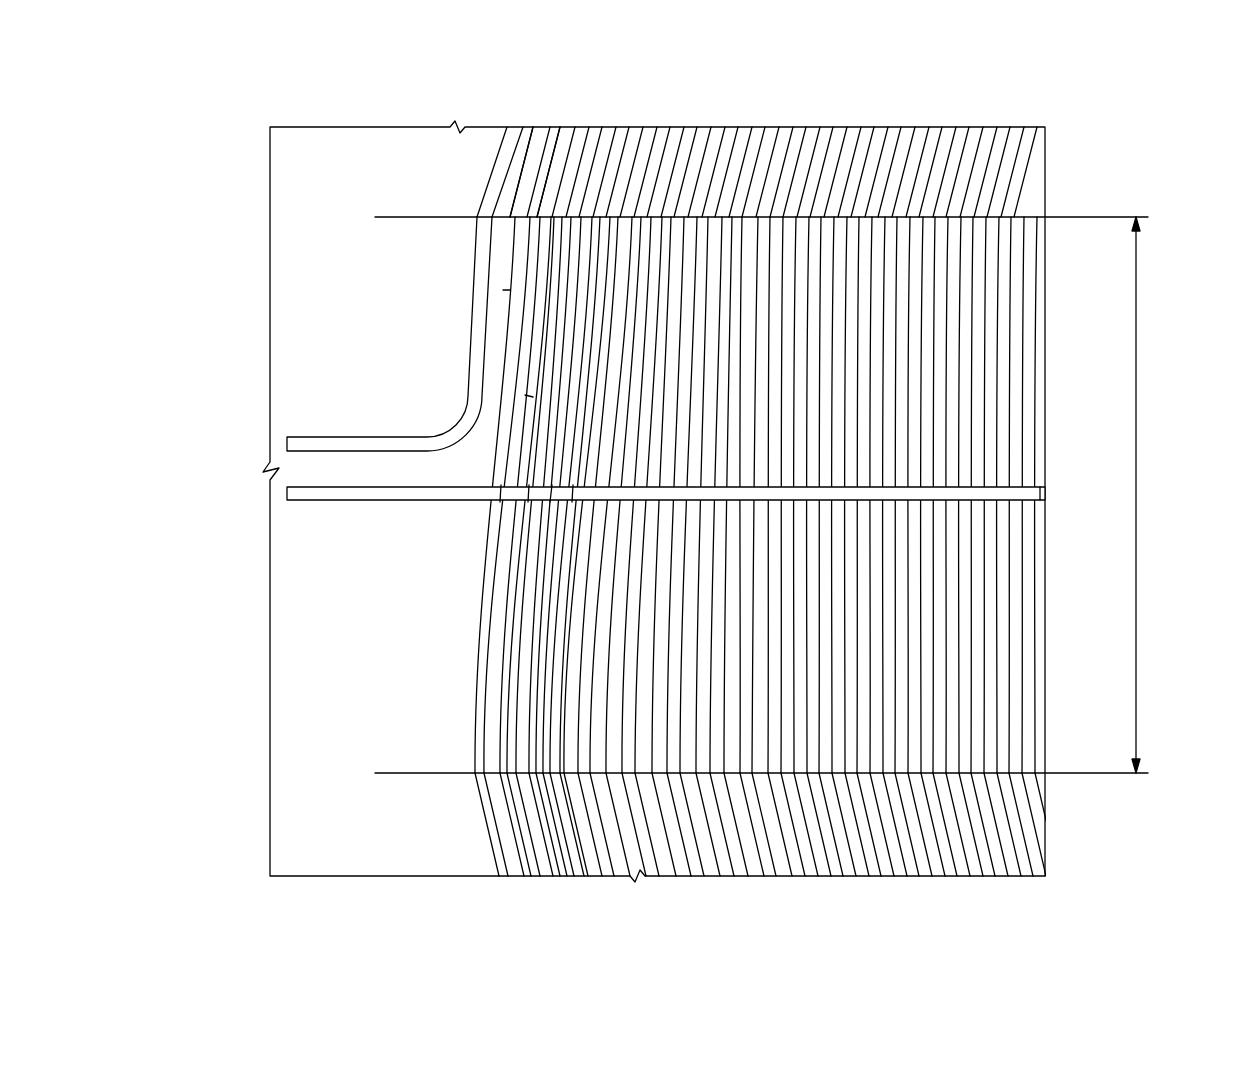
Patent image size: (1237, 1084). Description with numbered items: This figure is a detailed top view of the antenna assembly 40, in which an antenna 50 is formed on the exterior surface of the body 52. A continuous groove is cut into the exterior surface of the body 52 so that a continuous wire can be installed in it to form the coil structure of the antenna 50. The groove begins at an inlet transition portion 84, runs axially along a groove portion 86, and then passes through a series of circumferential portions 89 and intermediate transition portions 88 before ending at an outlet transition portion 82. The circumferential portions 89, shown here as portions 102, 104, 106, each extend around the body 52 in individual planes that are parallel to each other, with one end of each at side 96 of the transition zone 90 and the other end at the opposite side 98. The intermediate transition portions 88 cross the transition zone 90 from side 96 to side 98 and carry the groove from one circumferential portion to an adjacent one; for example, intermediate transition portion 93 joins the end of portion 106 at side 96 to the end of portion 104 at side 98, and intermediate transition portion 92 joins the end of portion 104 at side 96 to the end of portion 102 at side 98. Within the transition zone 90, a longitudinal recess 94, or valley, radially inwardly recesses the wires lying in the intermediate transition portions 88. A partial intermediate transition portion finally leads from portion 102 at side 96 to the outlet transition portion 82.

The antenna assembly 40 is at (1118, 96).
The antenna 50 is at (818, 459).
The body 52 is at (346, 840).
The outlet transition portion 82 is at (293, 441).
The inlet transition portion 84 is at (652, 512).
The groove portion 86 is at (1045, 493).
The intermediate transition portions 88 is at (1030, 328).
The circumferential portions 89 is at (1030, 182).
The transition zone 90 is at (1137, 365).
The intermediate transition portion 92 is at (507, 295).
The intermediate transition portion 93 is at (530, 397).
The longitudinal recess 94 is at (440, 560).
The side of transition zone 96 is at (385, 218).
The opposite side of transition zone 98 is at (450, 774).
The circumferential portion 102 is at (511, 126).
The circumferential portion 104 is at (534, 128).
The circumferential portion 106 is at (562, 128).